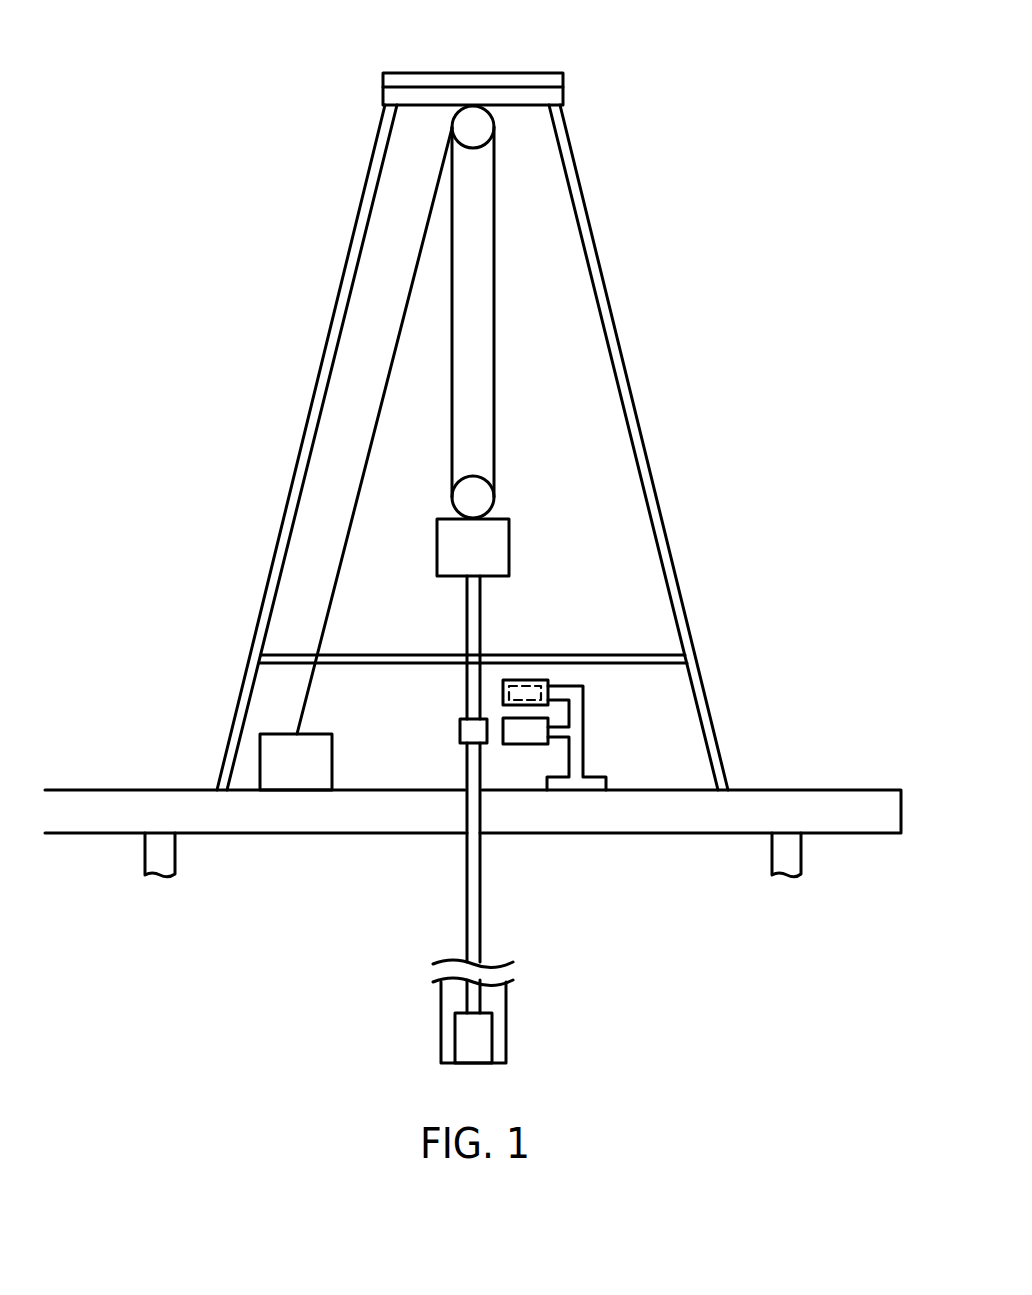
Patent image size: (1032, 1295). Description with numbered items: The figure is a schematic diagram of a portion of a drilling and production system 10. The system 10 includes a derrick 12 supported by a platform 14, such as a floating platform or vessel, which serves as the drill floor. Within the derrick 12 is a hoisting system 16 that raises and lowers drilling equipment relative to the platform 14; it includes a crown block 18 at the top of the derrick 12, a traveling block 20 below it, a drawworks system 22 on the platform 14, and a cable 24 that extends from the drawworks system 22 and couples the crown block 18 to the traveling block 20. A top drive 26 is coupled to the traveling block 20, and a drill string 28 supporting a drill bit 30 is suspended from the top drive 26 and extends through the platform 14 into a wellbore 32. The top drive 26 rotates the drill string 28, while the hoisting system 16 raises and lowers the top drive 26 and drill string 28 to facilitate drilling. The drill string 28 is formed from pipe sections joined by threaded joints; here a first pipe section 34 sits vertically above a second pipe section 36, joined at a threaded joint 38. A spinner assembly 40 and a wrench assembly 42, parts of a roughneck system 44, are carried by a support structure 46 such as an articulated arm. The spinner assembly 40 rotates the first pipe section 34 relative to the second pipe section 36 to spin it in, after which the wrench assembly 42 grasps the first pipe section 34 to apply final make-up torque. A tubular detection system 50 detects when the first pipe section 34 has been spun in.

The drilling and production system 10 is at (679, 113).
The derrick 12 is at (668, 540).
The platform 14 is at (808, 790).
The hoisting system 16 is at (378, 557).
The crown block 18 is at (472, 124).
The traveling block 20 is at (475, 497).
The drawworks system 22 is at (333, 763).
The cable 24 is at (382, 413).
The top drive 26 is at (481, 542).
The drill string 28 is at (481, 930).
The drill bit 30 is at (492, 1036).
The wellbore 32 is at (506, 1003).
The first pipe section 34 is at (481, 622).
The second pipe section 36 is at (467, 760).
The threaded joint 38 is at (460, 730).
The spinner assembly 40 is at (527, 680).
The wrench assembly 42 is at (527, 746).
The roughneck system 44 is at (600, 684).
The support structure 46 is at (583, 732).
The tubular detection system 50 is at (525, 697).